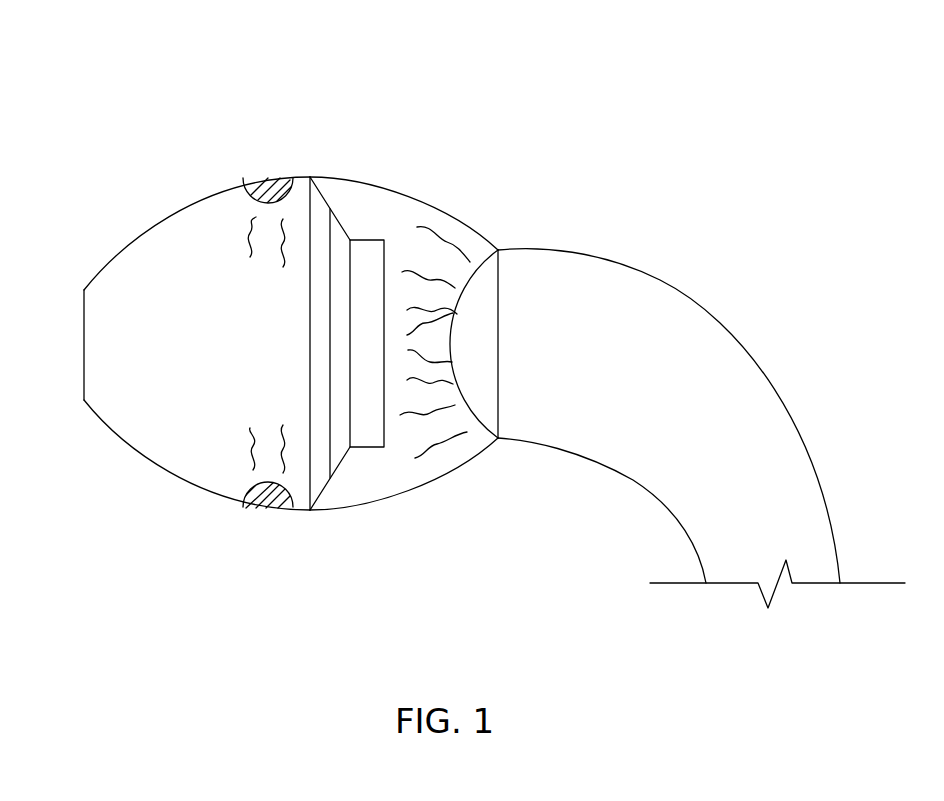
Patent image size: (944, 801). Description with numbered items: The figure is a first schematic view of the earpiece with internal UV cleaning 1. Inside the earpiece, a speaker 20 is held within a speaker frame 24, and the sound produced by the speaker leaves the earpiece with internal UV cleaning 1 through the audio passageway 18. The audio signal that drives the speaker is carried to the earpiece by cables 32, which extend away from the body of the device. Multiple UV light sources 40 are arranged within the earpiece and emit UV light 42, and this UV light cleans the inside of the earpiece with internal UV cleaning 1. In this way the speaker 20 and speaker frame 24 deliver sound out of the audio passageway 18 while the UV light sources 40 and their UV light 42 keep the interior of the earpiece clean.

The earpiece with internal UV cleaning 1 is at (263, 70).
The audio passageway 18 is at (84, 343).
The speaker 20 is at (402, 470).
The speaker frame 24 is at (320, 482).
The cables 32 is at (742, 346).
The UV light sources 40 is at (275, 185).
The UV light 42 is at (213, 248).